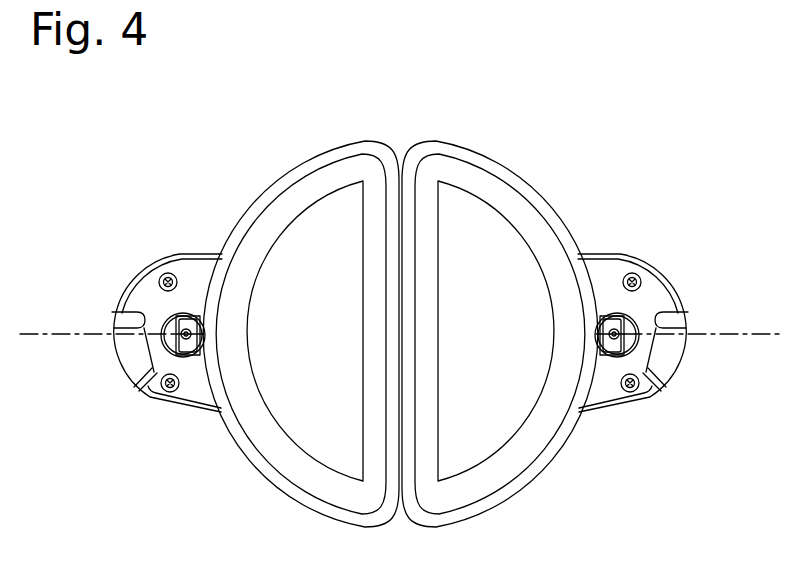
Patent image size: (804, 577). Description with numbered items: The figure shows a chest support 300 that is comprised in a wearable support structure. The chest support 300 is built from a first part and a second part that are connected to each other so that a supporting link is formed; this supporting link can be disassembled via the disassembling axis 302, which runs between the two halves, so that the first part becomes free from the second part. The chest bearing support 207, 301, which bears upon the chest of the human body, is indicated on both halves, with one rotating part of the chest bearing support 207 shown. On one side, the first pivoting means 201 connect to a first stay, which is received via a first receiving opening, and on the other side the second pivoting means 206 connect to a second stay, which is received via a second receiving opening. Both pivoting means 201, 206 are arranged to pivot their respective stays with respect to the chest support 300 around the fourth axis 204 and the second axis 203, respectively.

The chest support 300 is at (438, 281).
The chest bearing support 301 is at (318, 428).
The disassembling axis 302 is at (401, 150).
The first pivoting means 201 is at (190, 344).
The second axis 203 is at (80, 333).
The fourth axis 204 is at (718, 334).
The second pivoting means 206 is at (613, 322).
The chest bearing support 207 is at (493, 405).